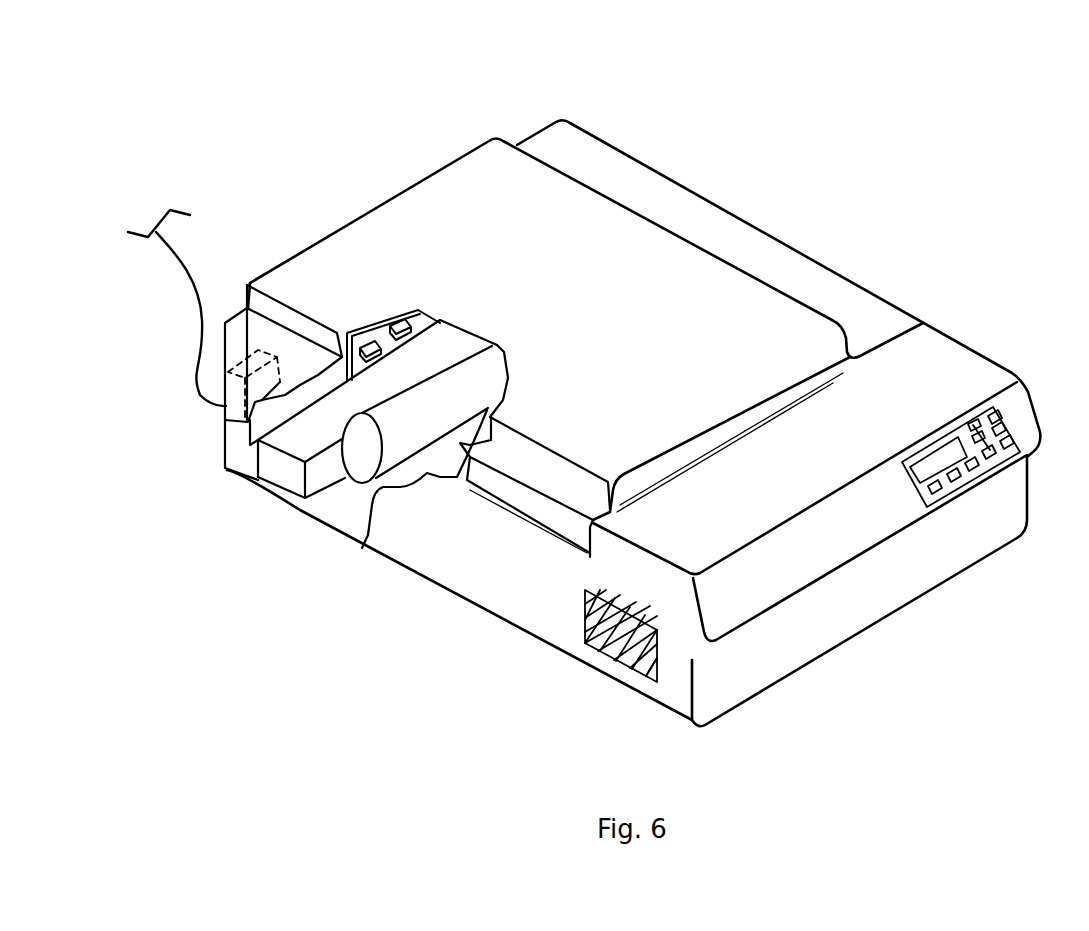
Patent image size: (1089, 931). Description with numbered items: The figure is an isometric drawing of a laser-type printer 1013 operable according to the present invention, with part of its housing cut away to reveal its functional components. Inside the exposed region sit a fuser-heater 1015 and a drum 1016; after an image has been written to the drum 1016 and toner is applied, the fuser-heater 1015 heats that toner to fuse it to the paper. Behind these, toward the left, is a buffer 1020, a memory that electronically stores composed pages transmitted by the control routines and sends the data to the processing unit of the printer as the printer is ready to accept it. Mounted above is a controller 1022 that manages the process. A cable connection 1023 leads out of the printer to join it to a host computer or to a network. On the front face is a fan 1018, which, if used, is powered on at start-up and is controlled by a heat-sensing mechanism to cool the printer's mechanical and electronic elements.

The laser-type printer 1013 is at (330, 136).
The fuser-heater 1015 is at (285, 467).
The drum 1016 is at (363, 452).
The fan 1018 is at (582, 629).
The buffer 1020 is at (234, 427).
The controller 1022 is at (386, 318).
The cable connection 1023 is at (176, 242).